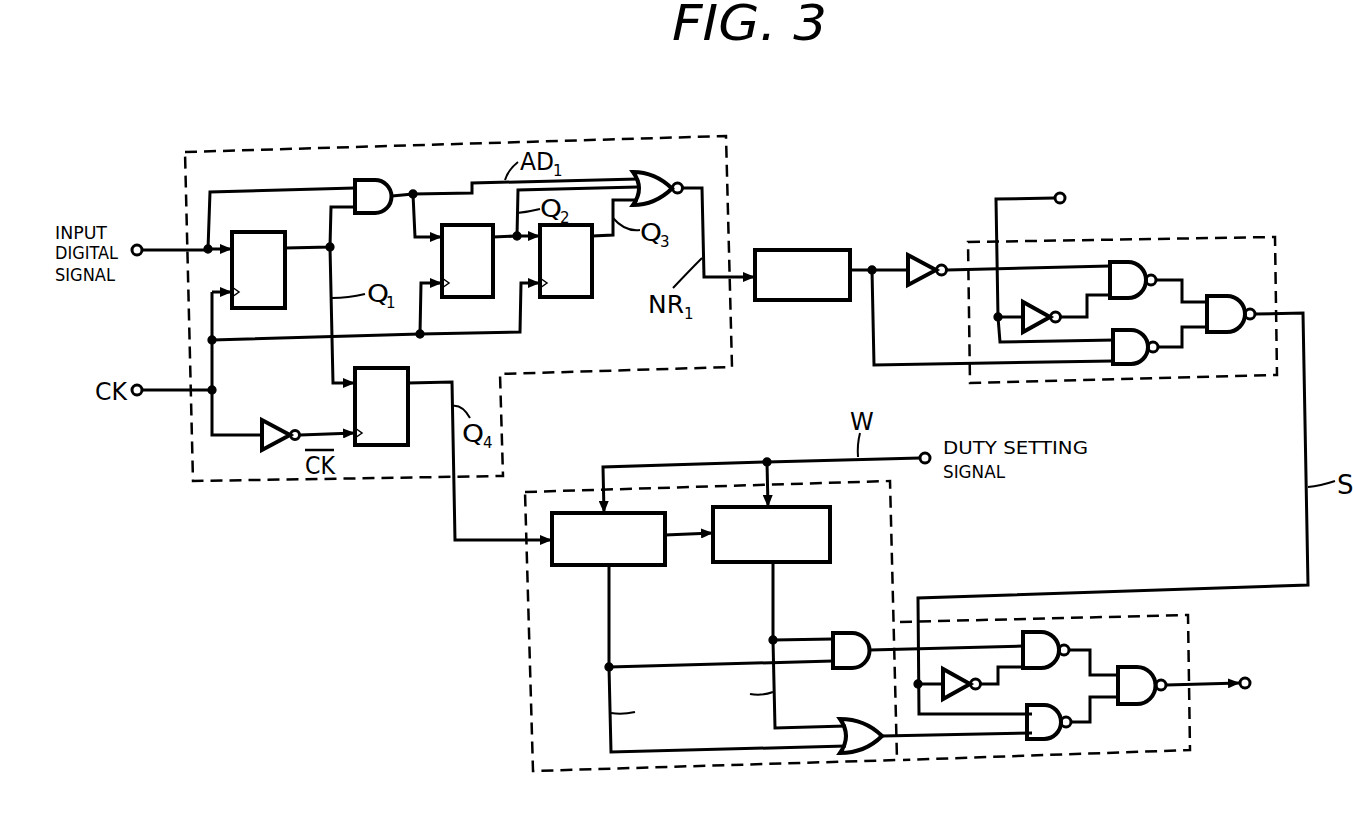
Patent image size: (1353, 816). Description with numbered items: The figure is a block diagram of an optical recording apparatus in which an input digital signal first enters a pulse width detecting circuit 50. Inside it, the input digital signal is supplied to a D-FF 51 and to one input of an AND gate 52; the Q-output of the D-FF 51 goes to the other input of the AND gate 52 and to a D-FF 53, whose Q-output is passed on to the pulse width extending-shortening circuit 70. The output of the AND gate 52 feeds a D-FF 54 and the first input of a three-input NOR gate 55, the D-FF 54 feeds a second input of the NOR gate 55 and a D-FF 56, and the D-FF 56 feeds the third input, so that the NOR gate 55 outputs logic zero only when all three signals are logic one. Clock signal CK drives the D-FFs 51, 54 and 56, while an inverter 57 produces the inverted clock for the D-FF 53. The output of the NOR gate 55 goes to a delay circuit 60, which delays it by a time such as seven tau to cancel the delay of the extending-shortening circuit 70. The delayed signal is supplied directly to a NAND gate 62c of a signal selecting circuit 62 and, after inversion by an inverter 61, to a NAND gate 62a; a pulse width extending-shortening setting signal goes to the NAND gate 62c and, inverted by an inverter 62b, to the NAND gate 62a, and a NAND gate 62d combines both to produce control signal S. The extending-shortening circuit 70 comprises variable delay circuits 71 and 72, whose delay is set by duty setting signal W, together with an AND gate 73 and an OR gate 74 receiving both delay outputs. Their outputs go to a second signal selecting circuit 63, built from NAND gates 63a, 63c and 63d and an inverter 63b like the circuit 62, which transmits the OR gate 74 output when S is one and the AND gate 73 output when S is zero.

The pulse width detecting circuit 50 is at (503, 138).
The D-FF 51 is at (285, 283).
The AND gate 52 is at (390, 181).
The D-FF 53 is at (395, 368).
The D-FF 54 is at (467, 224).
The three-input NOR gate 55 is at (654, 172).
The D-FF 56 is at (592, 281).
The inverter 57 is at (278, 420).
The delay circuit 60 is at (830, 250).
The inverter 61 is at (922, 255).
The signal selecting circuit 62 is at (1277, 256).
The NAND gate 62a is at (1140, 262).
The inverter 62b is at (1030, 302).
The NAND gate 62c is at (1128, 330).
The NAND gate 62d is at (1238, 296).
The pulse width extending-shortening circuit 70 is at (897, 537).
The variable delay circuit 71 is at (655, 566).
The variable delay circuit 72 is at (815, 563).
The AND gate 73 is at (855, 633).
The OR gate 74 is at (862, 719).
The signal selecting circuit 63 is at (1077, 760).
The NAND gate 63a is at (1053, 632).
The inverter 63b is at (958, 668).
The NAND gate 63c is at (1040, 705).
The NAND gate 63d is at (1150, 667).